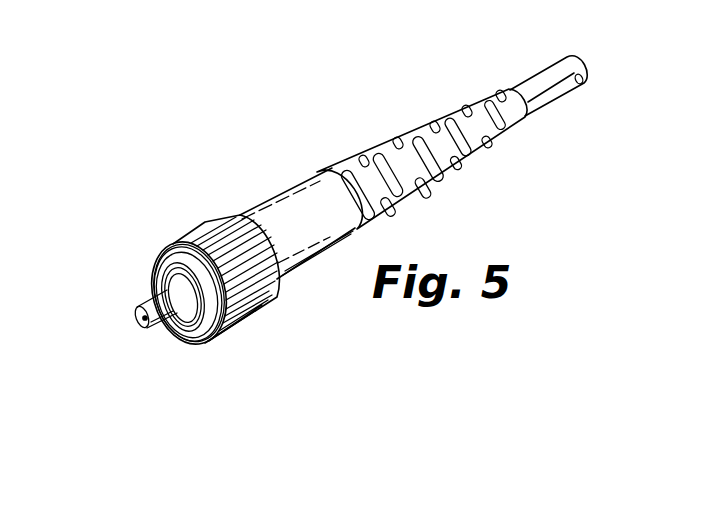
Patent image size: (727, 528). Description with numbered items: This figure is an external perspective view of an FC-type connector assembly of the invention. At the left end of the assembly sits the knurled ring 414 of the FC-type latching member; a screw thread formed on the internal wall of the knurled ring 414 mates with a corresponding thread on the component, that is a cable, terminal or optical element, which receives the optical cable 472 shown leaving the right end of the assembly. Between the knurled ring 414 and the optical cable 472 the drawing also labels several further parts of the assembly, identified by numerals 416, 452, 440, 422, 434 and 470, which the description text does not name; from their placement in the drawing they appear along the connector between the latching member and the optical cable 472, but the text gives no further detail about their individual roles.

The knurled ring 414 is at (207, 218).
The strain relief boot 416 is at (413, 130).
The ferrule 422 is at (149, 298).
The ferrule end face 434 is at (143, 327).
The nut front flange ring 440 is at (177, 248).
The connector body 452 is at (285, 198).
The optical fiber 470 is at (140, 318).
The optical cable 472 is at (533, 80).